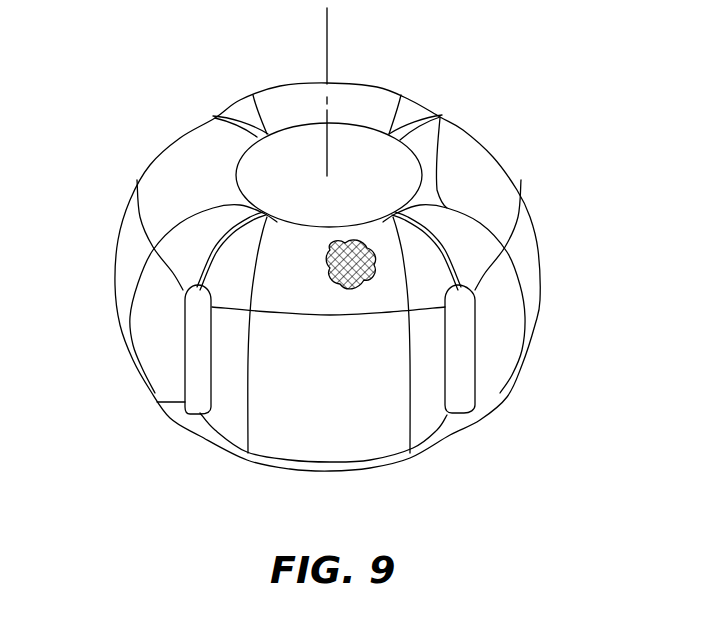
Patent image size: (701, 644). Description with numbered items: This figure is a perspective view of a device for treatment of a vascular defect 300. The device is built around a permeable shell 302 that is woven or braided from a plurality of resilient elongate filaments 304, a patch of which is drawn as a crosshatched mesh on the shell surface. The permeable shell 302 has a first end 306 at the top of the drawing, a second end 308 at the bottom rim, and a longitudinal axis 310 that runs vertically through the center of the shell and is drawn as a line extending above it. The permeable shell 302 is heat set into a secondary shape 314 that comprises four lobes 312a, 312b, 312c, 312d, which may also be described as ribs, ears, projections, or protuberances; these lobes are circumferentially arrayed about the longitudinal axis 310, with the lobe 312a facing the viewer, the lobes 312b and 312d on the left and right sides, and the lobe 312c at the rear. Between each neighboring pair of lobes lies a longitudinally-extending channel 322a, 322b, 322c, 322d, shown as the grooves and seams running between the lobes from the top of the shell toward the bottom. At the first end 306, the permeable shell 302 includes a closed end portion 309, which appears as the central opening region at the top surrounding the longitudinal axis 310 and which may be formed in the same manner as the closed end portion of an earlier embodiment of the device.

The device for treatment of a vascular defect 300 is at (138, 96).
The permeable shell 302 is at (527, 233).
The resilient elongate filaments 304 is at (376, 254).
The first end 306 is at (438, 162).
The second end 308 is at (415, 457).
The closed end portion 309 is at (340, 153).
The longitudinal axis 310 is at (328, 33).
The lobe 312a is at (310, 423).
The lobe 312b is at (125, 257).
The lobe 312c is at (300, 85).
The lobe 312d is at (528, 283).
The secondary shape 314 is at (104, 240).
The longitudinally-extending channel 322a is at (183, 290).
The longitudinally-extending channel 322b is at (215, 118).
The longitudinally-extending channel 322c is at (440, 118).
The longitudinally-extending channel 322d is at (470, 357).